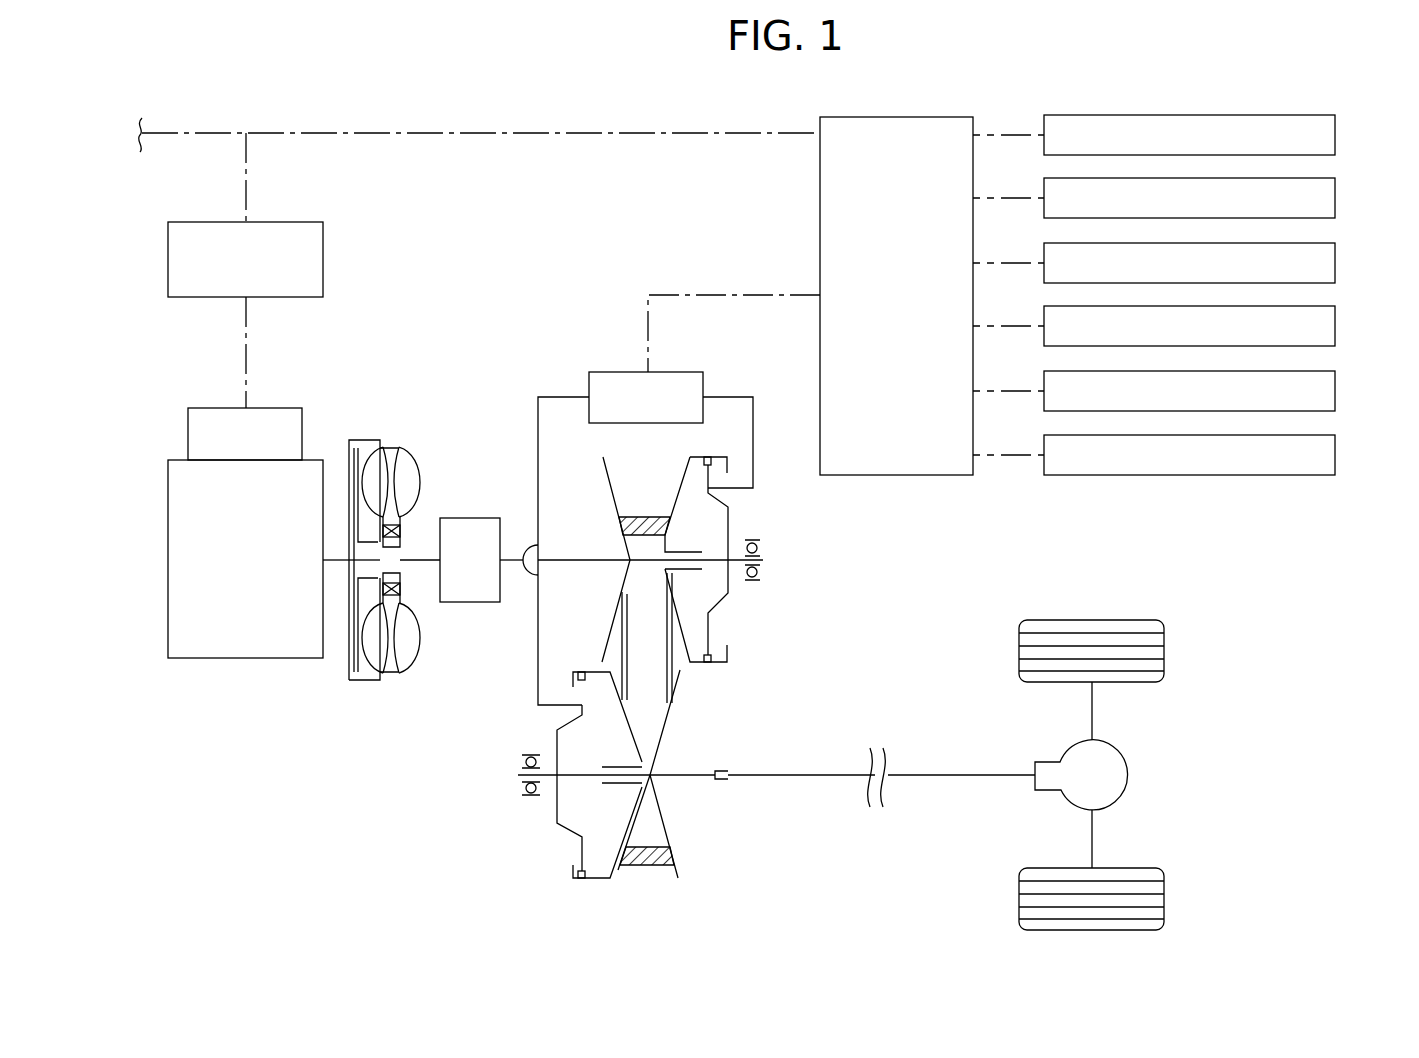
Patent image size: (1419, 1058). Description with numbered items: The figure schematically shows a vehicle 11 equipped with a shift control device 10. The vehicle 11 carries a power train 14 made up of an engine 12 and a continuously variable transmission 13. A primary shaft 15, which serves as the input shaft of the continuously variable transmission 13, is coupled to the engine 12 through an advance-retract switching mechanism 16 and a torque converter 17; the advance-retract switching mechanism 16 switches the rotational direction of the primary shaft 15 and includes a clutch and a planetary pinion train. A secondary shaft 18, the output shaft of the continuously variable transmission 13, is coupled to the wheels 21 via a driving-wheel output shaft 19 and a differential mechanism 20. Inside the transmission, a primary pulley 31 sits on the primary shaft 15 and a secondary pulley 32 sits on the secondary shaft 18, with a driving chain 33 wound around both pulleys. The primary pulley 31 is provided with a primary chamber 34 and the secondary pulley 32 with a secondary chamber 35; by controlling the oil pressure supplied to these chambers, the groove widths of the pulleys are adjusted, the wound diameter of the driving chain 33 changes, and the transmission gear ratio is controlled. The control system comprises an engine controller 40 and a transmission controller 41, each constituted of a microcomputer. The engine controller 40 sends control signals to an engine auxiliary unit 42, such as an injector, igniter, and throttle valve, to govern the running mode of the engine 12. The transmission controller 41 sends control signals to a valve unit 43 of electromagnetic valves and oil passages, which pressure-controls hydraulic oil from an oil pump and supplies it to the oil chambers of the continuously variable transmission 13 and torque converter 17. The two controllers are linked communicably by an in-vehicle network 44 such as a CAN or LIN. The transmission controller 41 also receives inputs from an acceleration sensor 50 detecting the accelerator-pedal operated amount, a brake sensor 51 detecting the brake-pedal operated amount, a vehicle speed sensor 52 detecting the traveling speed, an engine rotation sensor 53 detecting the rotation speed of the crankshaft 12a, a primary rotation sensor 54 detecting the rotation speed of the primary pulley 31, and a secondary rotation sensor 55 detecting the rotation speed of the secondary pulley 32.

The shift control device 10 is at (1048, 77).
The vehicle 11 is at (230, 864).
The engine 12 is at (215, 658).
The crankshaft 12a is at (331, 560).
The continuously variable transmission 13 is at (728, 874).
The power train 14 is at (355, 772).
The primary shaft 15 is at (578, 560).
The advance-retract switching mechanism 16 is at (470, 518).
The torque converter 17 is at (376, 438).
The secondary shaft 18 is at (692, 775).
The driving-wheel output shaft 19 is at (815, 775).
The differential mechanism 20 is at (1128, 775).
The wheels 21 is at (1165, 648).
The primary pulley 31 is at (732, 520).
The secondary pulley 32 is at (684, 822).
The driving chain 33 is at (644, 517).
The primary chamber 34 is at (722, 600).
The secondary chamber 35 is at (556, 732).
The engine controller 40 is at (323, 232).
The transmission controller 41 is at (818, 212).
The engine auxiliary unit 42 is at (278, 408).
The valve unit 43 is at (615, 372).
The in-vehicle network 44 is at (507, 133).
The acceleration sensor 50 is at (1337, 130).
The brake sensor 51 is at (1337, 193).
The vehicle speed sensor 52 is at (1337, 258).
The engine rotation sensor 53 is at (1337, 321).
The primary rotation sensor 54 is at (1337, 386).
The secondary rotation sensor 55 is at (1337, 450).